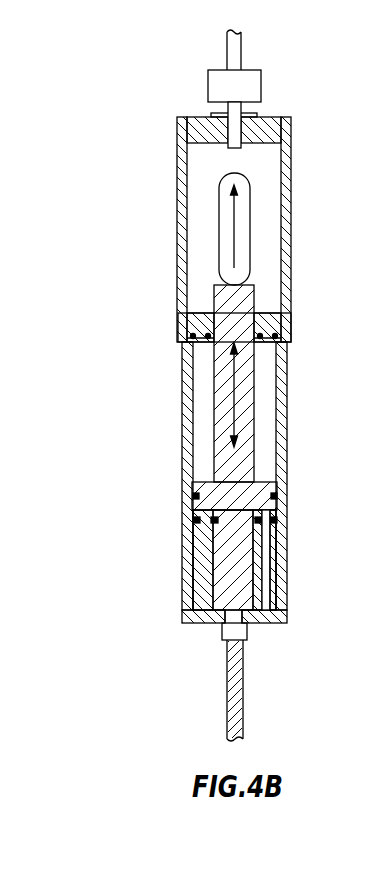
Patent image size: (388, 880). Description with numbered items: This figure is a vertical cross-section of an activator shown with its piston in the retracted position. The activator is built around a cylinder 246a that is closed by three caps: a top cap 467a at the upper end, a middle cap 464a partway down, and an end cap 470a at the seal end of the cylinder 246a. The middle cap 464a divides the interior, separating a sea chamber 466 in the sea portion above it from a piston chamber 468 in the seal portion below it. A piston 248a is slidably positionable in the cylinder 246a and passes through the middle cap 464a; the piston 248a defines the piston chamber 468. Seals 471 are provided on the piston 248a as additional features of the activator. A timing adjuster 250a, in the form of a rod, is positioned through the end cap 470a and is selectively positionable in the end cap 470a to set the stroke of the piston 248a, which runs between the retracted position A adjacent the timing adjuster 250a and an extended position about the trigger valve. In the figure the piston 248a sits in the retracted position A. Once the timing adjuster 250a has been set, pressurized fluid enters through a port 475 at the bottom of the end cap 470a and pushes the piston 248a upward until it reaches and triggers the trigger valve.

The top cap 467a is at (200, 129).
The cylinder 246a is at (291, 190).
The sea chamber 466 is at (205, 242).
The retracted position A is at (258, 287).
The middle cap 464a is at (185, 321).
The piston 248a is at (222, 399).
The piston chamber 468 is at (202, 427).
The seals 471 is at (278, 494).
The timing adjuster 250a is at (242, 573).
The port 475 is at (260, 603).
The end cap 470a is at (205, 627).